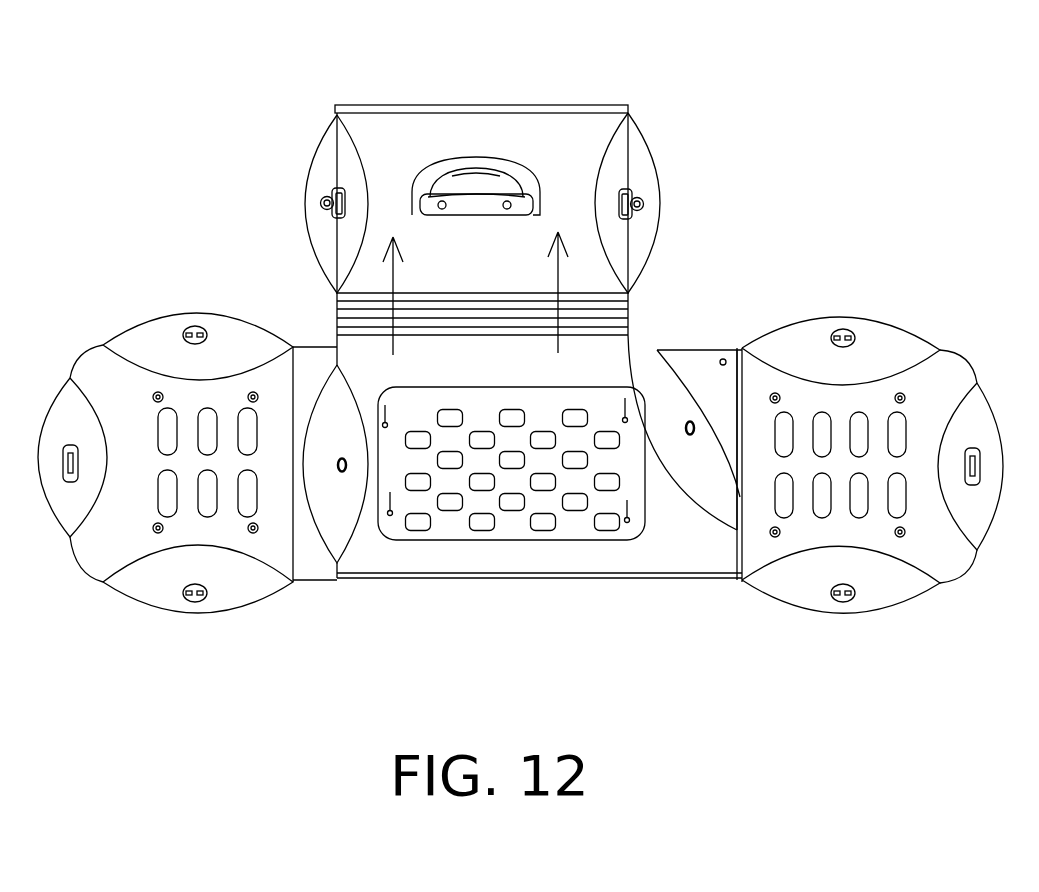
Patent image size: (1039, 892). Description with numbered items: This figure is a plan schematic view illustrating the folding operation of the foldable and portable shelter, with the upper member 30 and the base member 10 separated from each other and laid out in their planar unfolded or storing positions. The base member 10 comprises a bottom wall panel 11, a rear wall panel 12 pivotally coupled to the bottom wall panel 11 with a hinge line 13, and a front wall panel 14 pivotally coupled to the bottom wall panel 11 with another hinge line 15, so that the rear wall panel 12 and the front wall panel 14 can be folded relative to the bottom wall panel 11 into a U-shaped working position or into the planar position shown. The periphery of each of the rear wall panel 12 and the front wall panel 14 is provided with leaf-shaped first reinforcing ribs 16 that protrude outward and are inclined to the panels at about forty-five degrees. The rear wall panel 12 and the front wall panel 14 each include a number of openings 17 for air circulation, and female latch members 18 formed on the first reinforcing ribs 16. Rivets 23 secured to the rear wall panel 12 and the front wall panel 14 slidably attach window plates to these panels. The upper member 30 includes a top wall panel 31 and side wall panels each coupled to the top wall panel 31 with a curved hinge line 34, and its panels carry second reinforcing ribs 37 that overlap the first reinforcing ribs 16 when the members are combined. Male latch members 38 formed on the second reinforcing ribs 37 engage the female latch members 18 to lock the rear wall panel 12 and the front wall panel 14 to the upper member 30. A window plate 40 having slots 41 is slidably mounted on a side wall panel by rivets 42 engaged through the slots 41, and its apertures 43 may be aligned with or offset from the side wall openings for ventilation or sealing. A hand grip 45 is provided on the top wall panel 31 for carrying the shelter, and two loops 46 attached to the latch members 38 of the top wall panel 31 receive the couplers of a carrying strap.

The base member 10 is at (250, 617).
The bottom wall panel 11 is at (695, 362).
The rear wall panel 12 is at (85, 367).
The hinge line 13 is at (313, 597).
The front wall panel 14 is at (957, 363).
The hinge line 15 is at (755, 331).
The first reinforcing ribs 16 is at (66, 540).
The openings 17 is at (243, 492).
The latch members 18 is at (970, 480).
The rivets 23 is at (777, 397).
The upper member 30 is at (561, 124).
The top wall panel 31 is at (487, 122).
The hinge line 34 is at (613, 108).
The second reinforcing ribs 37 is at (327, 397).
The latch members 38 is at (343, 472).
The window plate 40 is at (463, 531).
The slots 41 is at (628, 512).
The rivets 42 is at (390, 514).
The apertures 43 is at (577, 507).
The hand grip 45 is at (447, 163).
The loops 46 is at (643, 202).